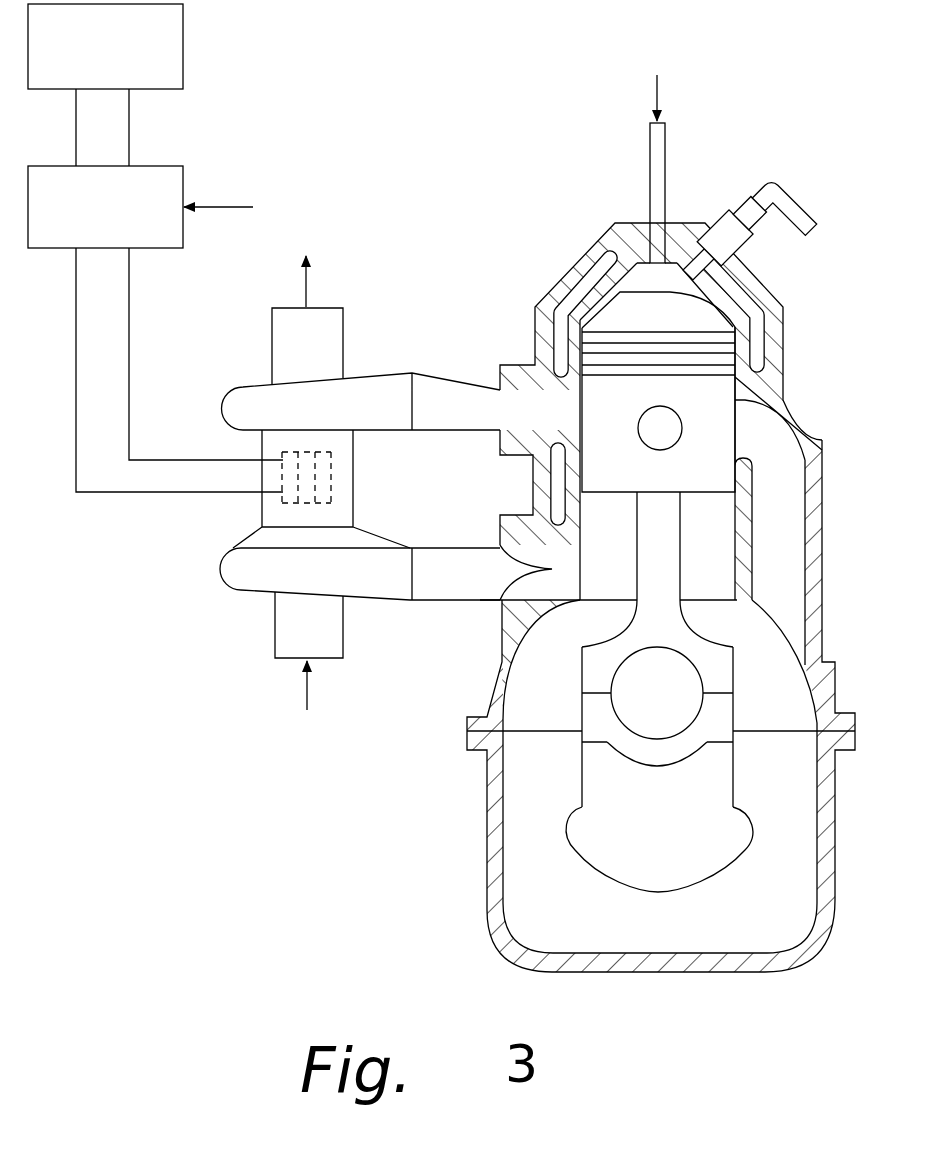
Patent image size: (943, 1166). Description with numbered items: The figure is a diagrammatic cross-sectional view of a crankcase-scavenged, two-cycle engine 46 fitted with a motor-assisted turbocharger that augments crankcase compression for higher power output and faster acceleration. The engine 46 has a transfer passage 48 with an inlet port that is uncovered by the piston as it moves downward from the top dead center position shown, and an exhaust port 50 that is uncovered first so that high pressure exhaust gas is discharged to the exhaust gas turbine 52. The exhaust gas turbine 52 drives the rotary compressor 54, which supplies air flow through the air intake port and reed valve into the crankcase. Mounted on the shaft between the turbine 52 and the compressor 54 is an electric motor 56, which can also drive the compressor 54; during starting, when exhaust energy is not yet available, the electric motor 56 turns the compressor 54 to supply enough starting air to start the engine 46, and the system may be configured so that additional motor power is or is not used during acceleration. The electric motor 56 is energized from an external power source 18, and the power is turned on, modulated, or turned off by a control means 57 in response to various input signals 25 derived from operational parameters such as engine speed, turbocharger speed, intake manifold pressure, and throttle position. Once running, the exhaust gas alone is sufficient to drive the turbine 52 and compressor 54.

The external power source 18 is at (84, 60).
The control means 57 is at (83, 224).
The input signals 25 is at (236, 205).
The exhaust gas turbine 52 is at (237, 388).
The rotary compressor 54 is at (246, 582).
The electric motor 56 is at (280, 500).
The exhaust port 50 is at (518, 397).
The engine 46 is at (786, 356).
The transfer passage 48 is at (788, 448).